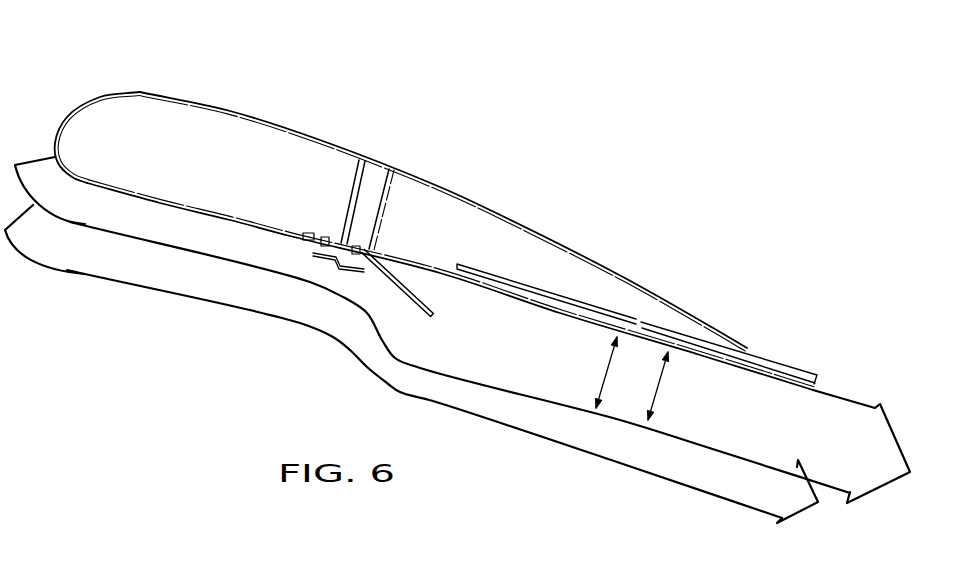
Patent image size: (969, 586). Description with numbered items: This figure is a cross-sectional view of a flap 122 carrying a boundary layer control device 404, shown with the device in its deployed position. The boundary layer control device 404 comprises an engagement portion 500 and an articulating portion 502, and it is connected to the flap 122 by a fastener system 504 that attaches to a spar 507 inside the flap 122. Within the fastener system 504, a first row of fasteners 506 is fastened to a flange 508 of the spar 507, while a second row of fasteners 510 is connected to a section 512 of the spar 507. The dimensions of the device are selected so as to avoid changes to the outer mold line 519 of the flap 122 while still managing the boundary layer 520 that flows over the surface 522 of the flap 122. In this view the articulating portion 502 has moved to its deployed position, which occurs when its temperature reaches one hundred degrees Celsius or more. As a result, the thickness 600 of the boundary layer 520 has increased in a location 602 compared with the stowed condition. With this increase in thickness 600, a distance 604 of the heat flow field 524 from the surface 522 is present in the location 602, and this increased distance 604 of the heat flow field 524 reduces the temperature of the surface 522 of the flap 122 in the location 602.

The engagement portion 500 is at (286, 263).
The articulating portion 502 is at (413, 293).
The fastener system 504 is at (322, 255).
The first row of fasteners 506 is at (325, 238).
The spar 507 is at (358, 188).
The flange 508 is at (308, 237).
The second row of fasteners 510 is at (372, 242).
The section 512 is at (362, 248).
The outer mold line 519 is at (577, 248).
The boundary layer 520 is at (88, 98).
The surface 522 is at (792, 390).
The heat flow field 524 is at (800, 517).
The boundary layer control device 404 is at (433, 310).
The thickness 600 is at (607, 368).
The location 602 is at (640, 313).
The distance 604 is at (660, 390).
The flap 122 is at (710, 328).